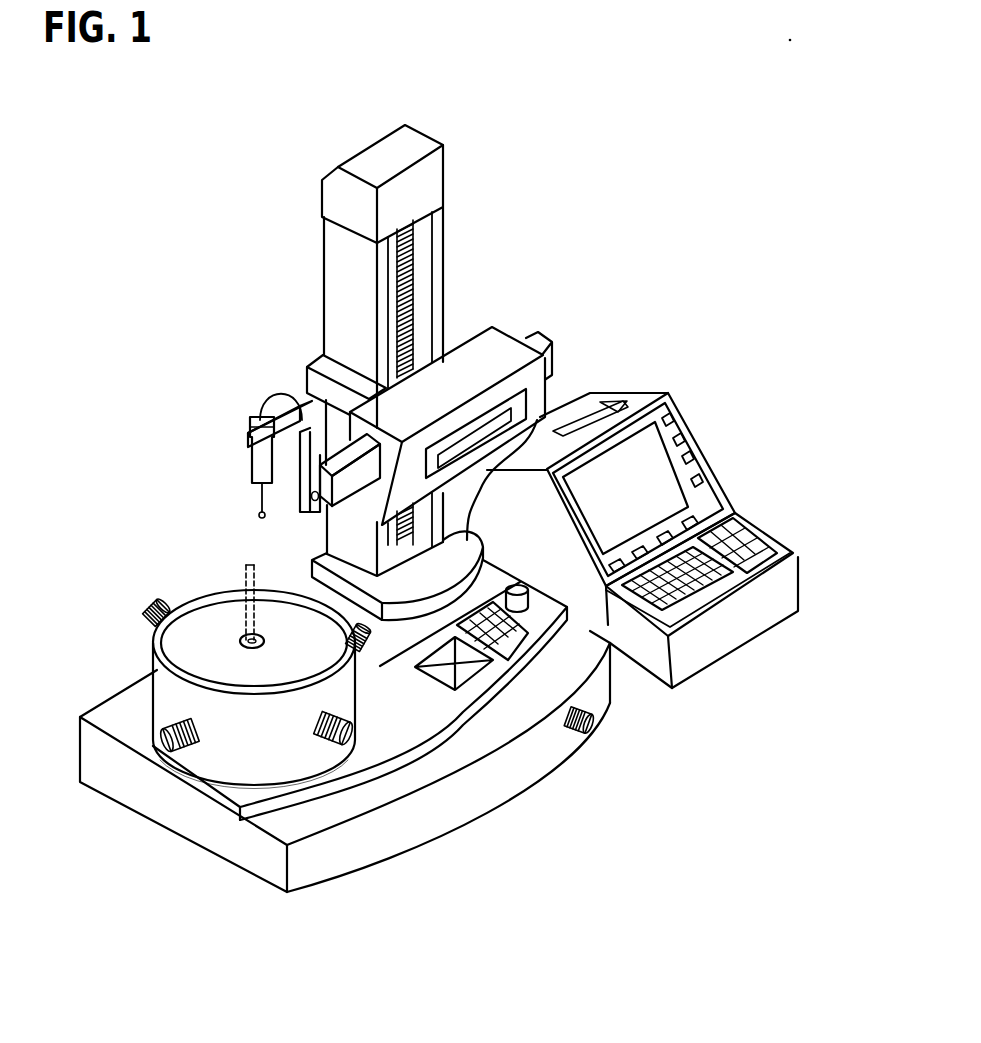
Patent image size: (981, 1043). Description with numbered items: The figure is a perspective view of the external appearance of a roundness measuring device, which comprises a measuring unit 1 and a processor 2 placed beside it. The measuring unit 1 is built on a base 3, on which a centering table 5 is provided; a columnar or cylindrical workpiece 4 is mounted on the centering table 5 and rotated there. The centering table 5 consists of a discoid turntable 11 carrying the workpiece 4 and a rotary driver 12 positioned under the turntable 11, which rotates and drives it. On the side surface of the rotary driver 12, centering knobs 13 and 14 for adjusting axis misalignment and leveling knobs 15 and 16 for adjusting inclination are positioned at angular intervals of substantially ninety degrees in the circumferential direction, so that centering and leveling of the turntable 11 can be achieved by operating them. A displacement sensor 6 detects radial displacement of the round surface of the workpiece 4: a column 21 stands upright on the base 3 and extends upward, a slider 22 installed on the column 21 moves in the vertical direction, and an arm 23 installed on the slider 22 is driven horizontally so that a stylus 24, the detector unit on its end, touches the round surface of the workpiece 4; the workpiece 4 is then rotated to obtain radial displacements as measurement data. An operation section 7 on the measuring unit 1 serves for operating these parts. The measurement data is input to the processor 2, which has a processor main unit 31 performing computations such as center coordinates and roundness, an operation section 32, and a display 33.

The measuring unit 1 is at (127, 562).
The processor 2 is at (713, 437).
The base 3 is at (88, 745).
The workpiece 4 is at (249, 565).
The centering table 5 is at (146, 648).
The displacement sensor 6 is at (310, 346).
The operation section 7 is at (498, 613).
The turntable 11 is at (188, 622).
The rotary driver 12 is at (217, 770).
The centering knob 13 is at (160, 745).
The centering knob 14 is at (340, 740).
The leveling knob 15 is at (358, 652).
The leveling knob 16 is at (143, 604).
The column 21 is at (437, 181).
The slider 22 is at (507, 343).
The arm 23 is at (349, 448).
The stylus 24 is at (254, 497).
The processor main unit 31 is at (783, 592).
The operation section 32 is at (747, 540).
The display 33 is at (645, 435).